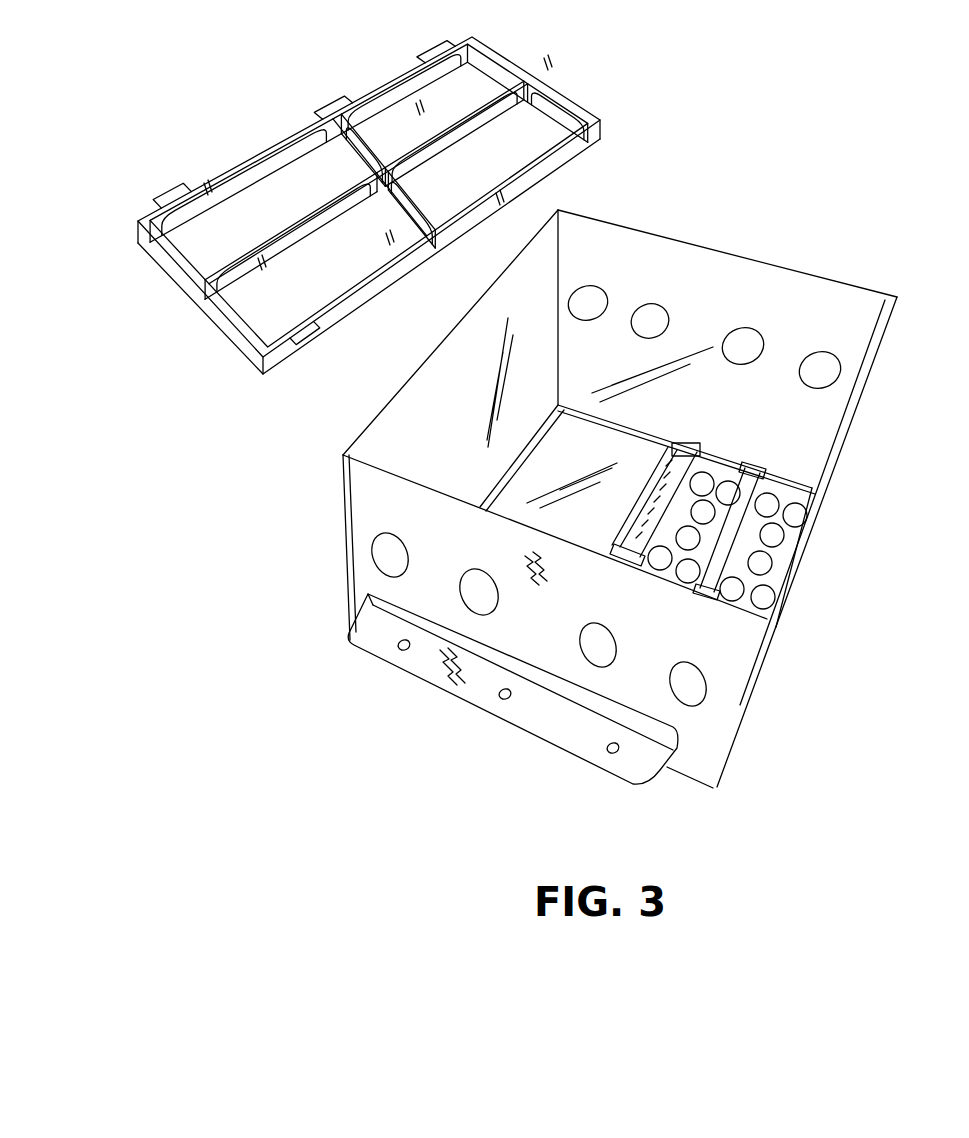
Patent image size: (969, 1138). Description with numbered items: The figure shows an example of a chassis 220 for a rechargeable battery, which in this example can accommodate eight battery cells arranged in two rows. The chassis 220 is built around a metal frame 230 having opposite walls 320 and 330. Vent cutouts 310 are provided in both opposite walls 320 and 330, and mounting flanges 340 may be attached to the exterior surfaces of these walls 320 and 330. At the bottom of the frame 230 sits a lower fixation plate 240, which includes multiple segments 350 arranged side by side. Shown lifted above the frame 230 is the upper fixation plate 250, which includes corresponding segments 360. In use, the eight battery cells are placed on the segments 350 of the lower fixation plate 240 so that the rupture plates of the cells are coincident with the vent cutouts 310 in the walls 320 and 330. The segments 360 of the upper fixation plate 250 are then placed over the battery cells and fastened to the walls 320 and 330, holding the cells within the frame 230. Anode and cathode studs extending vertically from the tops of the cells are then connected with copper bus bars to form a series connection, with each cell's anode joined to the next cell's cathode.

The chassis 220 is at (155, 38).
The upper fixation plate 250 is at (389, 199).
The segments 360 is at (517, 68).
The metal frame 230 is at (588, 499).
The wall 320 is at (727, 253).
The vent cutouts 310 is at (745, 332).
The wall 330 is at (349, 488).
The mounting flanges 340 is at (362, 640).
The segments 350 is at (663, 537).
The lower fixation plate 240 is at (752, 470).